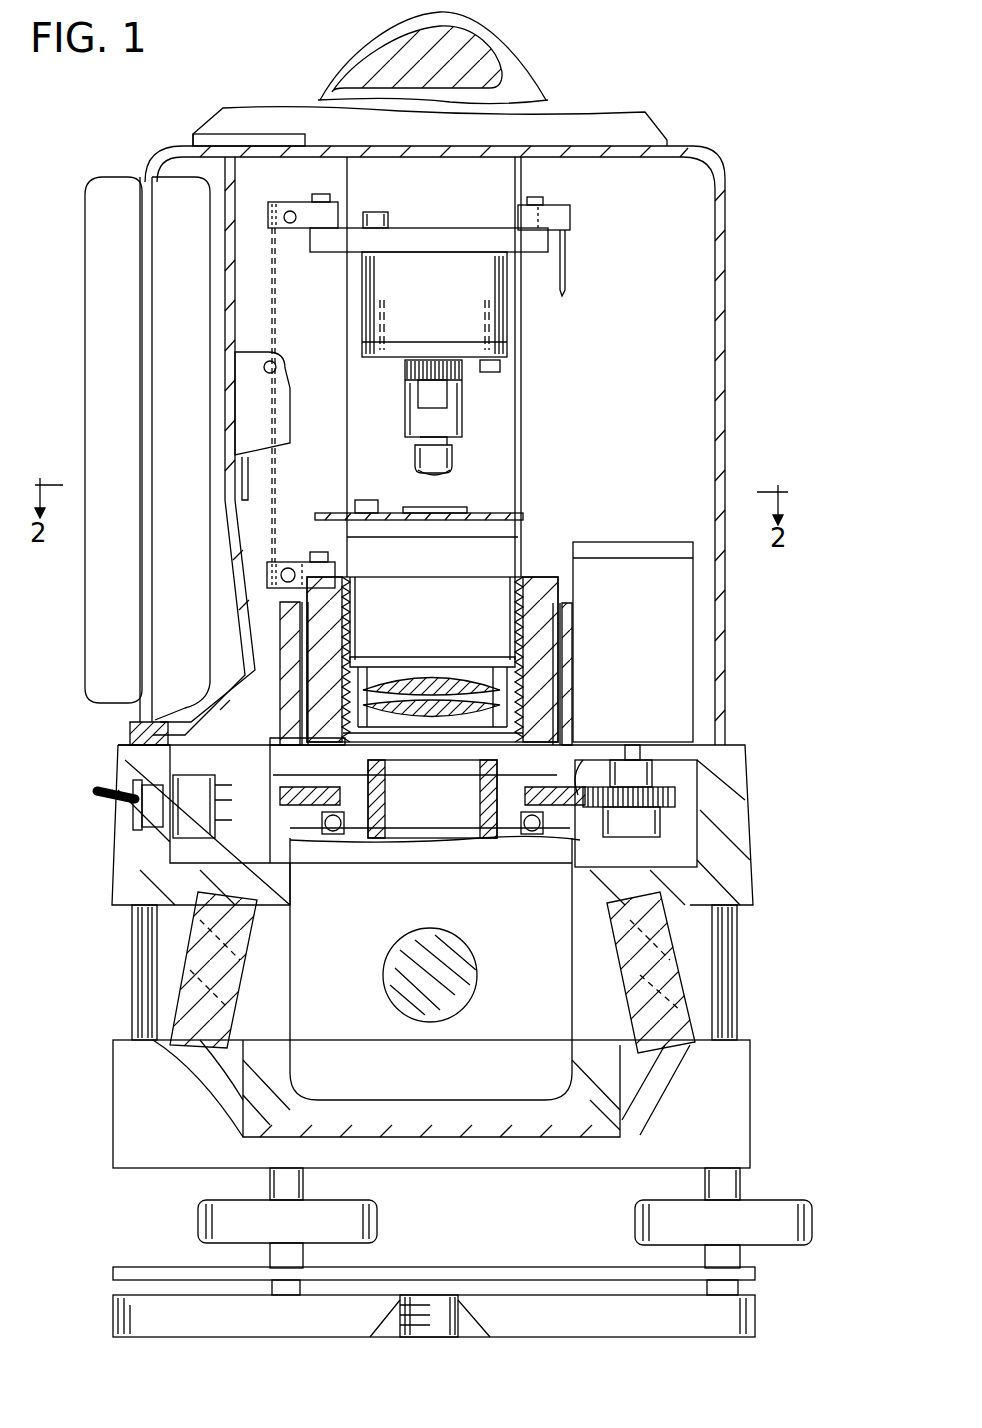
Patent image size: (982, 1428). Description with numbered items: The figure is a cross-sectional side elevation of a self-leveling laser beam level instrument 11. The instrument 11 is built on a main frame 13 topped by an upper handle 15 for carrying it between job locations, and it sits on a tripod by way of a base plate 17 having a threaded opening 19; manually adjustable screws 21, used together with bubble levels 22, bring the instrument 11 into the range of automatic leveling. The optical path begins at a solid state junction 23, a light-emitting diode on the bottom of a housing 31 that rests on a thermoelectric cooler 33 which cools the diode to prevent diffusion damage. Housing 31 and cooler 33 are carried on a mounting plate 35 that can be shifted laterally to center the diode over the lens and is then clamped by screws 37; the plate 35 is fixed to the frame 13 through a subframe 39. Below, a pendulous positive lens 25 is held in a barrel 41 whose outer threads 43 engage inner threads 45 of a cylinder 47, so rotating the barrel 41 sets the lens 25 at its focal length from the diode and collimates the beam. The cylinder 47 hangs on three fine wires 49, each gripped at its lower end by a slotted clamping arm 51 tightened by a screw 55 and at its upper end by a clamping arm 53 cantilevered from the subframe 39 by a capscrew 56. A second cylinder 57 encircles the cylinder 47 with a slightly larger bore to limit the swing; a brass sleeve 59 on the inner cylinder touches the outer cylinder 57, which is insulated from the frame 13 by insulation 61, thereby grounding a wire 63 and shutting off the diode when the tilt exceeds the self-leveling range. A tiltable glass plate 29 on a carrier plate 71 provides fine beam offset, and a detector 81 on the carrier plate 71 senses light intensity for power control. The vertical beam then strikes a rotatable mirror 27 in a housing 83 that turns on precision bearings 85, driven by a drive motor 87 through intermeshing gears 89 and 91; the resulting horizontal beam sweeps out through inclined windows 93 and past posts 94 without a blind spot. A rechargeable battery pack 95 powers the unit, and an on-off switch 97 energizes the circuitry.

The laser beam level instrument 11 is at (684, 108).
The main frame 13 is at (280, 768).
The upper handle 15 is at (495, 58).
The base plate 17 is at (236, 1328).
The threaded opening 19 is at (460, 1308).
The manually adjustable screws 21 is at (273, 1187).
The bubble levels 22 is at (305, 134).
The solid state junction 23 is at (442, 480).
The pendulous positive lens 25 is at (440, 682).
The rotatable mirrors 27 is at (465, 973).
The glass plate 29 is at (420, 507).
The housing 31 is at (452, 458).
The thermoelectric cooler 33 is at (463, 372).
The mounting plate 35 is at (490, 348).
The screws 37 is at (503, 368).
The subframe 39 is at (478, 248).
The barrel 41 is at (385, 633).
The outer threads 43 is at (518, 647).
The inner threads 45 is at (515, 602).
The cylinder 47 is at (526, 577).
The fine wires 49 is at (566, 272).
The clamping arm 51 is at (333, 570).
The clamping arm 53 is at (292, 202).
The screw 55 is at (291, 223).
The capscrew 56 is at (340, 180).
The second cylinder 57 is at (560, 605).
The brass sleeve 59 is at (332, 618).
The insulation 61 is at (278, 742).
The wire 63 is at (314, 552).
The carrier plate 71 is at (328, 512).
The detector 81 is at (375, 500).
The housing 83 is at (577, 827).
The precision bearings 85 is at (523, 818).
The drive motor 87 is at (657, 648).
The gear 89 is at (668, 808).
The gear 91 is at (580, 760).
The inclined windows 93 is at (630, 985).
The posts 94 is at (140, 958).
The battery pack 95 is at (129, 334).
The on-off switch 97 is at (118, 805).